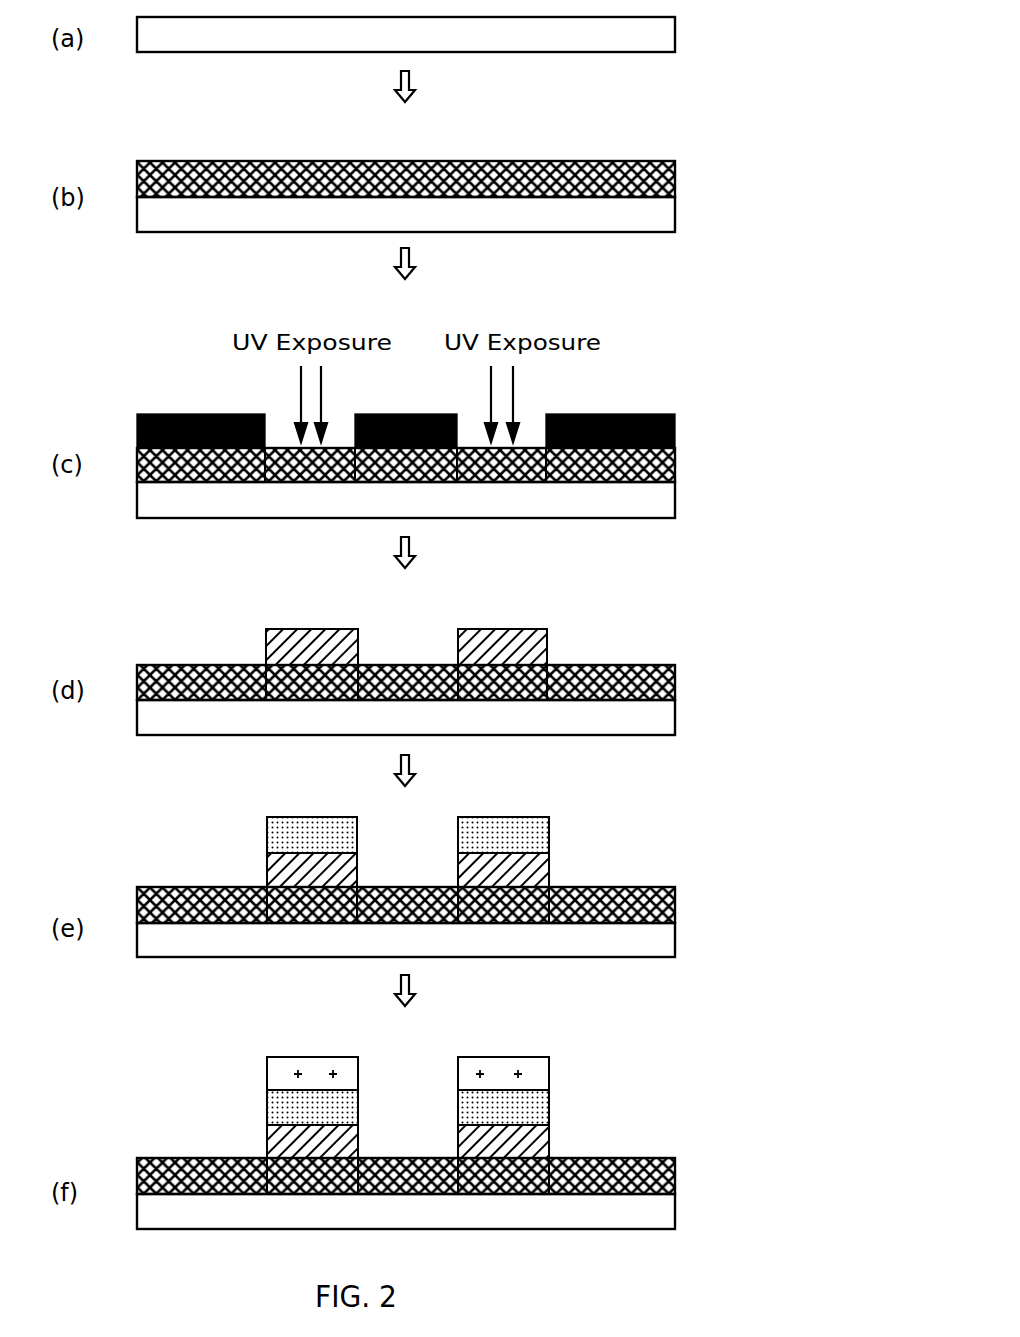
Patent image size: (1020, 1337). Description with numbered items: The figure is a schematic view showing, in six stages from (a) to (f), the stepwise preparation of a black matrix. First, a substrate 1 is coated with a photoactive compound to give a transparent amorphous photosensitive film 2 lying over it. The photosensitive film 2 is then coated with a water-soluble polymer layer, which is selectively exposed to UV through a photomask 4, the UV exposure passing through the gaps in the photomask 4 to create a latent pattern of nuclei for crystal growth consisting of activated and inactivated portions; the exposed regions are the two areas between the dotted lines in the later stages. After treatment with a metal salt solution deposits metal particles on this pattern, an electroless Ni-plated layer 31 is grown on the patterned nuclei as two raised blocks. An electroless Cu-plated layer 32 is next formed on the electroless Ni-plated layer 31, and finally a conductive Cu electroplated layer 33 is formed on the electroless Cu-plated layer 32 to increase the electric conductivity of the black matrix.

The substrate 1 is at (675, 33).
The photosensitive film 2 is at (675, 178).
The photomask 4 is at (675, 430).
The electroless Ni-plated layer 31 is at (547, 641).
The electroless Cu-plated layer 32 is at (549, 830).
The Cu electroplated layer 33 is at (549, 1068).